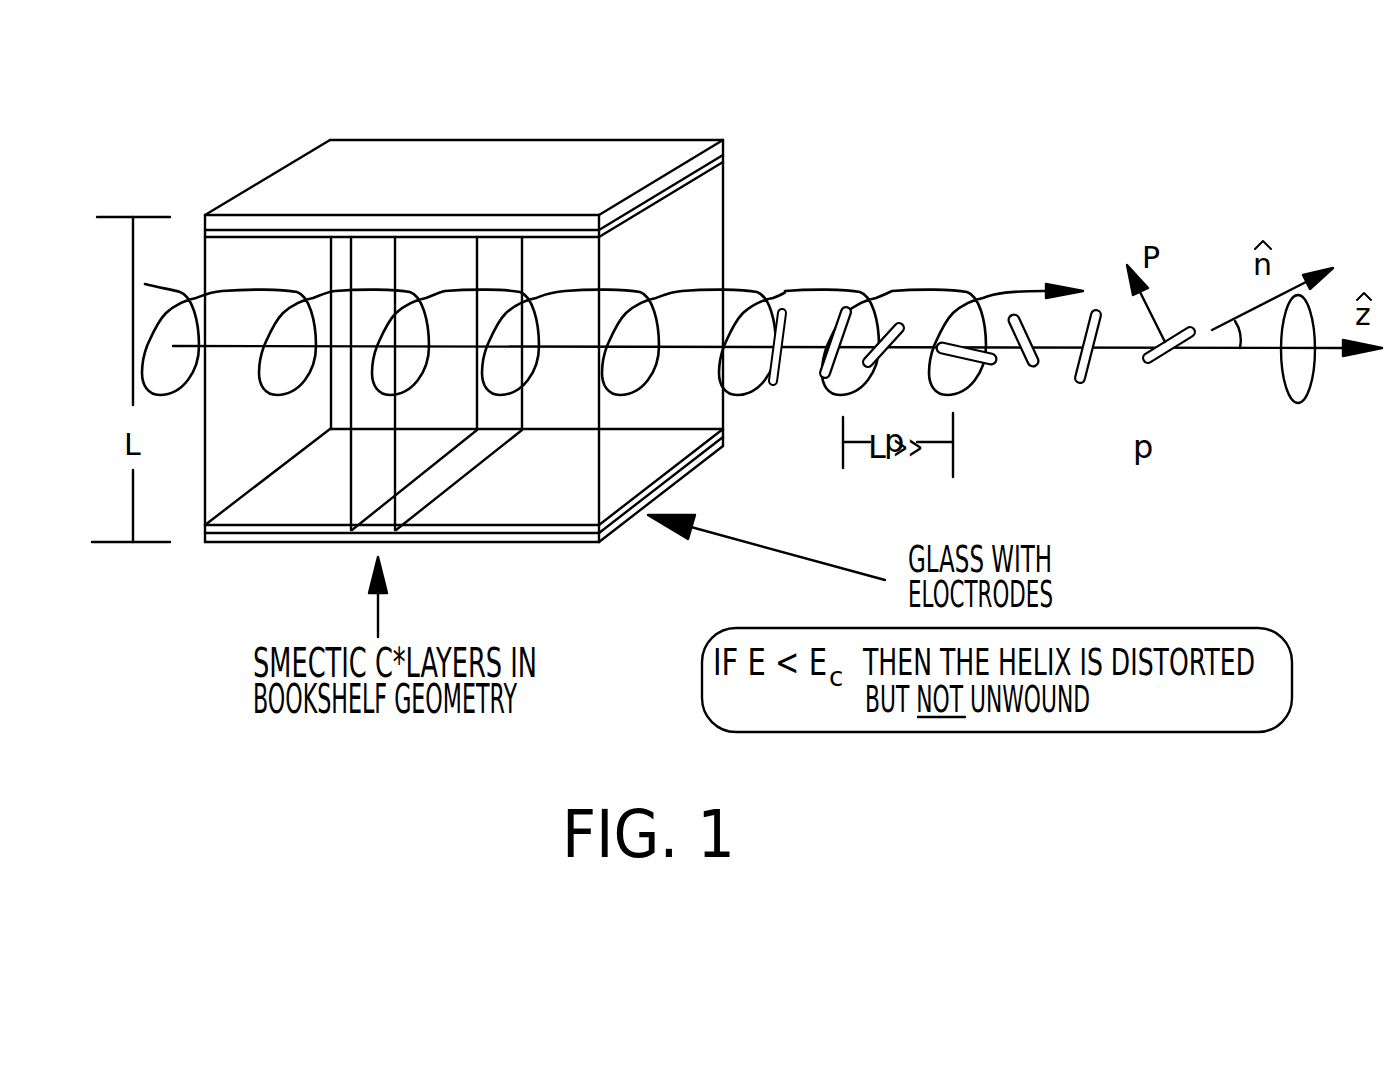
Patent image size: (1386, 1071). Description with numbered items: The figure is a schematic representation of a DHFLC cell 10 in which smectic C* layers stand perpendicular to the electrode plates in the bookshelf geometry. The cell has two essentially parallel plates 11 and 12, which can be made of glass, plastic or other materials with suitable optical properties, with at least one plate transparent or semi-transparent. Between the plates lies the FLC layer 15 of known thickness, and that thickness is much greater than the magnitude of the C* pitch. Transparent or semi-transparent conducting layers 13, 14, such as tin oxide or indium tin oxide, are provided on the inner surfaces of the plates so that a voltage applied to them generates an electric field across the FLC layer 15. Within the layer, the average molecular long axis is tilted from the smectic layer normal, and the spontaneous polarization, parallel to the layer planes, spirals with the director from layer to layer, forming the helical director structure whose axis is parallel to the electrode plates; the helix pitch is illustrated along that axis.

The DHFLC cell 10 is at (1000, 198).
The plate 11 is at (707, 142).
The plate 12 is at (695, 468).
The conducting layer 13 is at (700, 188).
The conducting layer 14 is at (723, 418).
The FLC layer 15 is at (235, 448).